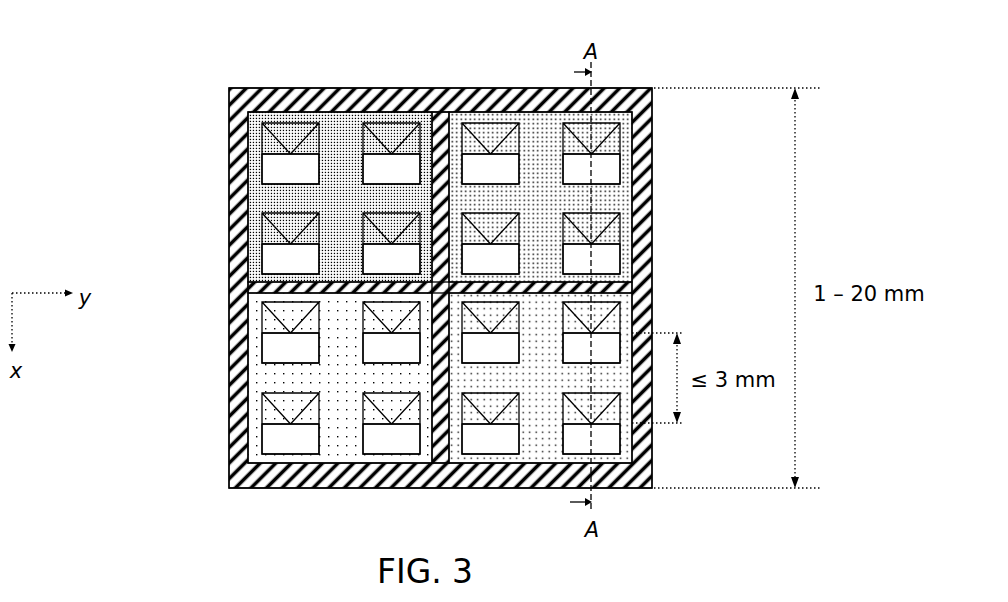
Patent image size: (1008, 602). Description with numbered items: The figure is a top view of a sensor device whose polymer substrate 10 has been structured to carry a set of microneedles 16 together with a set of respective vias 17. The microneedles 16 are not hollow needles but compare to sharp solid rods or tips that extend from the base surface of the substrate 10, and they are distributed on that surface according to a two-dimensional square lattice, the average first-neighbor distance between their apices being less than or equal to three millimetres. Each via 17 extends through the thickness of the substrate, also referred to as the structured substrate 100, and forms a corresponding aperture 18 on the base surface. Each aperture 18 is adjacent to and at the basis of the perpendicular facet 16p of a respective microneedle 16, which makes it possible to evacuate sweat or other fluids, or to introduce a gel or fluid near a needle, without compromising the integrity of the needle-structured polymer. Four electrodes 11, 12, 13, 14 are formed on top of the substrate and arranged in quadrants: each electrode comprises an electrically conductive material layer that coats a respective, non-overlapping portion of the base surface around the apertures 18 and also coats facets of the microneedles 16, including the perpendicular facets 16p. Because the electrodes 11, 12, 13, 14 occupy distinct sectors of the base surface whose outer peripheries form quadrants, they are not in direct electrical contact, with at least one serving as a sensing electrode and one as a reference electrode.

The polymer substrate 10 is at (204, 467).
The electrode 11 is at (341, 142).
The electrode 12 is at (541, 143).
The additional electrode 13 is at (540, 440).
The additional electrode 14 is at (333, 440).
The microneedle 16 is at (288, 128).
The perpendicular facet 16p is at (286, 255).
The via 17 is at (282, 172).
The aperture 18 is at (624, 257).
The substrate 100 is at (652, 160).